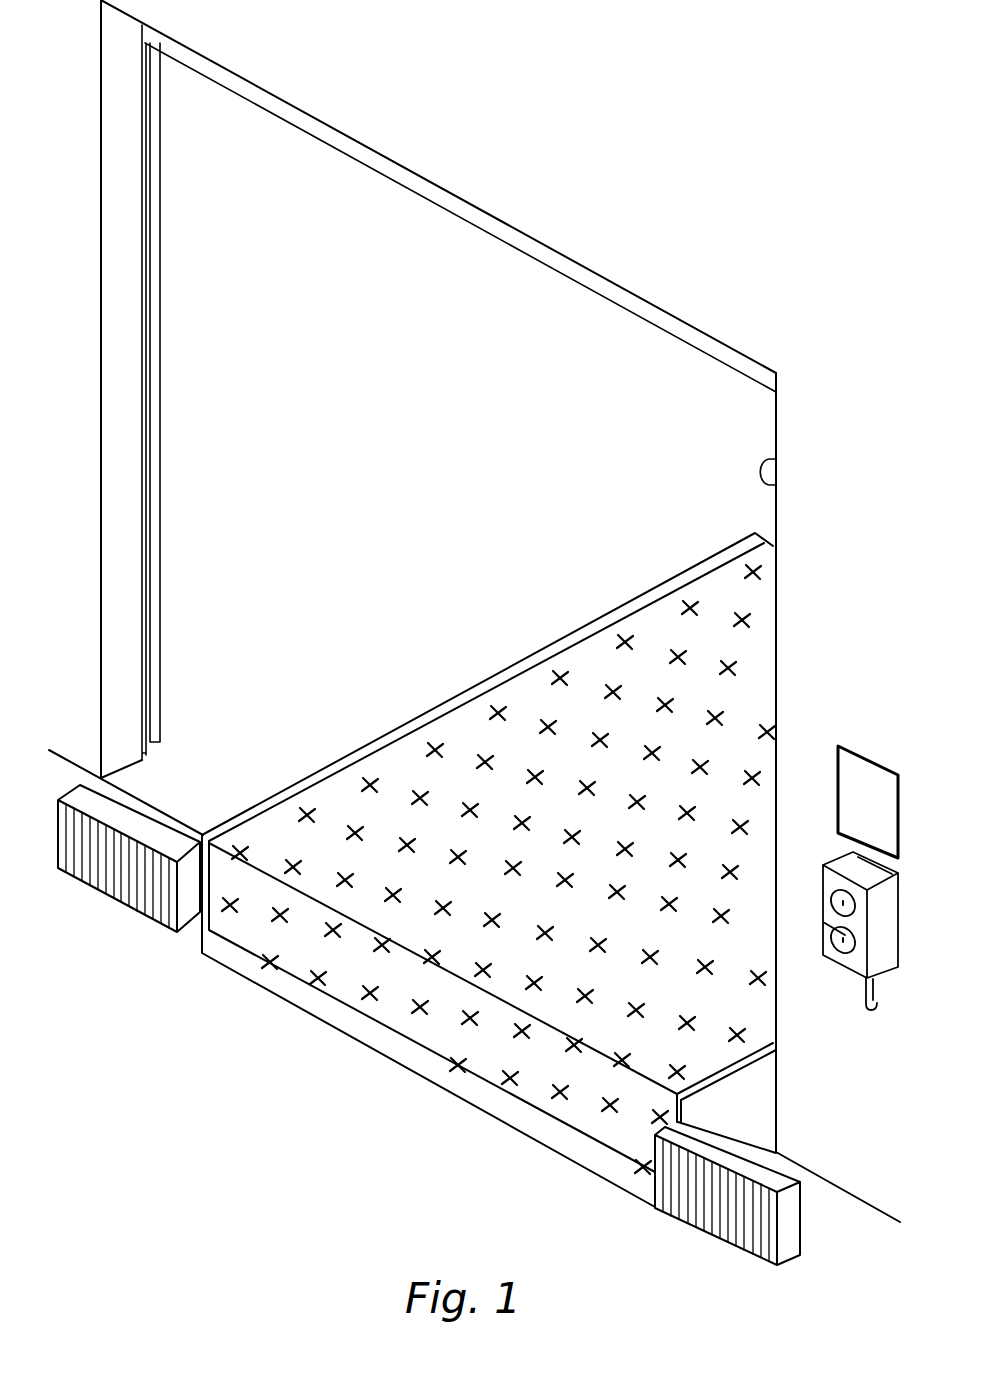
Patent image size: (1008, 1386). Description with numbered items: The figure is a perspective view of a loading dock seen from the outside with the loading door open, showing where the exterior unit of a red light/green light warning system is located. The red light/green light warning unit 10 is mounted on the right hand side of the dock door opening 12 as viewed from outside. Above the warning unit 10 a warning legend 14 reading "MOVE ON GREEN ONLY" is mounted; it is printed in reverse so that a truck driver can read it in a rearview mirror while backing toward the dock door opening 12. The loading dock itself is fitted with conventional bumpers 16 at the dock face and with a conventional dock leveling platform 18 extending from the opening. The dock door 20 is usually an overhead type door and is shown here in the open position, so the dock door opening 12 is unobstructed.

The red light/green light warning unit 10 is at (890, 987).
The dock door opening 12 is at (776, 462).
The warning sign 14 is at (868, 760).
The bumpers 16 is at (120, 907).
The dock leveling platform 18 is at (410, 742).
The dock door 20 is at (517, 250).